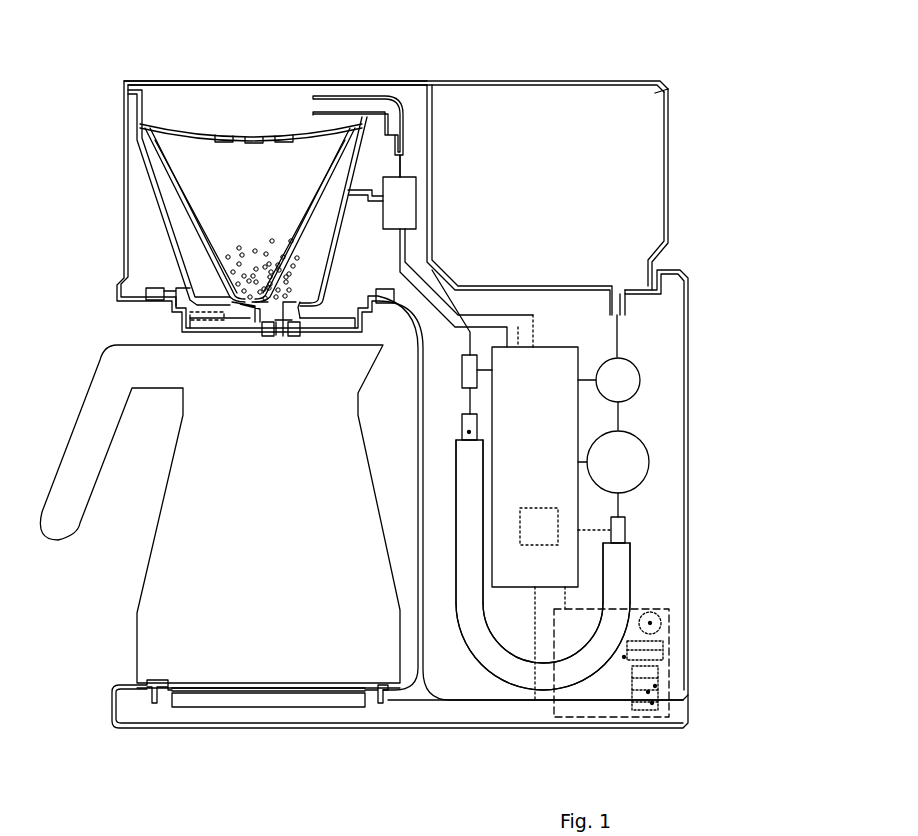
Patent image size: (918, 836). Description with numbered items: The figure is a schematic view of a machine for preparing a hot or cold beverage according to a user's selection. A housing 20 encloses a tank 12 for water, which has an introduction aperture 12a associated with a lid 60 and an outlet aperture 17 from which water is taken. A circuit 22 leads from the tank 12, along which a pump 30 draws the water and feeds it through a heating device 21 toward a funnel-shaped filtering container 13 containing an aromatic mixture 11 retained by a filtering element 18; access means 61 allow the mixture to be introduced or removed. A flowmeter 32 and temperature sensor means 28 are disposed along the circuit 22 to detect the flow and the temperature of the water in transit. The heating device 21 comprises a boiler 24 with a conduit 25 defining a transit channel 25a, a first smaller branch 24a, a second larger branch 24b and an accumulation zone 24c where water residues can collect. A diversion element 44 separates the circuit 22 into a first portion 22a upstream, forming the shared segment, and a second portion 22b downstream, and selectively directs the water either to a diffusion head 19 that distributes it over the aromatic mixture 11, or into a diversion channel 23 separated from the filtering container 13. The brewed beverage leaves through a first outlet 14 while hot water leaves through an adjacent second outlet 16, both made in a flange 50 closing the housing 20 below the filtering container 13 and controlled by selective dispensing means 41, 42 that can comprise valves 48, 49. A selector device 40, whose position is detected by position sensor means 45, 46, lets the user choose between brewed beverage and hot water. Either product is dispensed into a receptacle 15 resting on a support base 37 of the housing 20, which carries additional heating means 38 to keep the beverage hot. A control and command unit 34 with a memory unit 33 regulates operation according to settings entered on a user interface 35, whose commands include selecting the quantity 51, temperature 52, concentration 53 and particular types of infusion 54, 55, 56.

The aromatic mixture 11 is at (228, 256).
The tank 12 is at (672, 192).
The introduction aperture 12a is at (662, 93).
The filtering container 13 is at (136, 170).
The first outlet 14 is at (268, 340).
The receptacle 15 is at (120, 588).
The second outlet 16 is at (290, 340).
The outlet aperture 17 is at (622, 316).
The filtering element 18 is at (175, 196).
The diffusion head 19 is at (288, 105).
The housing 20 is at (690, 266).
The heating device 21 is at (640, 590).
The circuit 22 is at (476, 290).
The first portion 22a is at (438, 288).
The second portion 22b is at (400, 168).
The diversion channel 23 is at (330, 246).
The boiler 24 is at (630, 530).
The first smaller branch 24a is at (618, 562).
The second larger branch 24b is at (468, 577).
The accumulation zone 24c is at (544, 690).
The conduit 25 is at (460, 428).
The transit channel 25a is at (466, 434).
The temperature sensor means 28 is at (469, 370).
The pump 30 is at (622, 464).
The flowmeter 32 is at (622, 382).
The memory unit 33 is at (539, 526).
The control and command unit 34 is at (536, 467).
The user interface 35 is at (672, 670).
The support base 37 is at (384, 704).
The additional heating means 38 is at (230, 701).
The selector device 40 is at (200, 325).
The selective dispensing means 41 is at (256, 332).
The selective dispensing means 42 is at (278, 342).
The diversion element 44 is at (403, 203).
The position sensor means 45 is at (150, 294).
The position sensor means 46 is at (388, 306).
The valve 48 is at (247, 283).
The valve 49 is at (300, 280).
The flange 50 is at (330, 336).
The quantity command 51 is at (660, 626).
The temperature command 52 is at (658, 680).
The concentration command 53 is at (624, 658).
The infusion command 54 is at (628, 720).
The infusion command 55 is at (650, 693).
The infusion command 56 is at (654, 705).
The lid 60 is at (541, 81).
The access means 61 is at (206, 81).